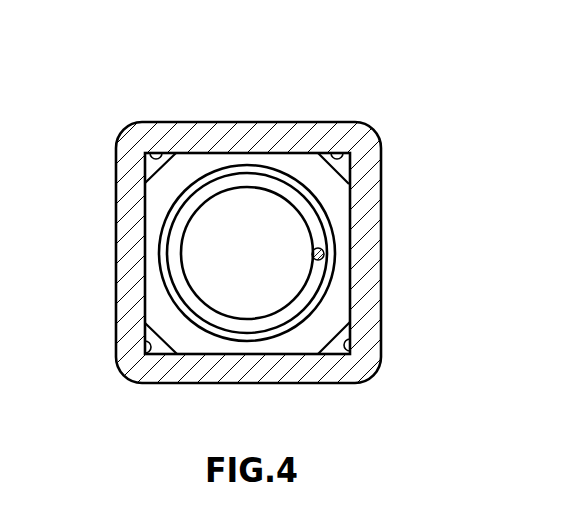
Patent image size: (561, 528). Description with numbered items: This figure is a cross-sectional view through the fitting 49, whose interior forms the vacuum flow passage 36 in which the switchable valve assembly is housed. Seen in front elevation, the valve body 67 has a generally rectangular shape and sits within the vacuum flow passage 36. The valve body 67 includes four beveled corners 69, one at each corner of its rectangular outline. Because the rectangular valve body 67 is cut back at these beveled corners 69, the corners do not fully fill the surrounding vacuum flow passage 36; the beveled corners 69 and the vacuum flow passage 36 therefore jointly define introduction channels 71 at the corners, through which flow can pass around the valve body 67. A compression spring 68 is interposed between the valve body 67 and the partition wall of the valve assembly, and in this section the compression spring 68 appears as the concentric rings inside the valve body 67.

The vacuum flow passage 36 is at (301, 118).
The fitting 49 is at (370, 247).
The valve body 67 is at (331, 295).
The compression spring 68 is at (177, 255).
The beveled corners 69 is at (162, 186).
The introduction channels 71 is at (160, 151).